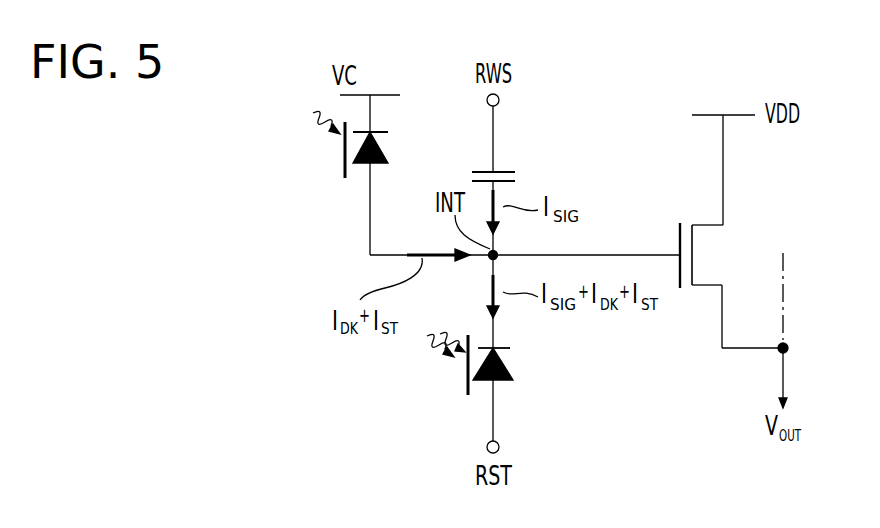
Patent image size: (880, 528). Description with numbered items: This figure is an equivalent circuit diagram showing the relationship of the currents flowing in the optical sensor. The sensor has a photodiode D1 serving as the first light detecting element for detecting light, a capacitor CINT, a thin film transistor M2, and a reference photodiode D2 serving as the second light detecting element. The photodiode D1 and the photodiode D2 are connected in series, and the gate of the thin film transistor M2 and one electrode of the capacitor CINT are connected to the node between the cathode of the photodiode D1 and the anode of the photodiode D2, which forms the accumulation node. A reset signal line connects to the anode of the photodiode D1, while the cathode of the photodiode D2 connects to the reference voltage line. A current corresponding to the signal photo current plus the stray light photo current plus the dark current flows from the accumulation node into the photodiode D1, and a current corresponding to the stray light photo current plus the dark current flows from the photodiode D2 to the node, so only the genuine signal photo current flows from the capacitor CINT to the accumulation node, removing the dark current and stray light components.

The photodiode D1 is at (482, 372).
The photodiode D2 is at (367, 144).
The thin film transistor M2 is at (716, 255).
The capacitor CINT is at (511, 163).